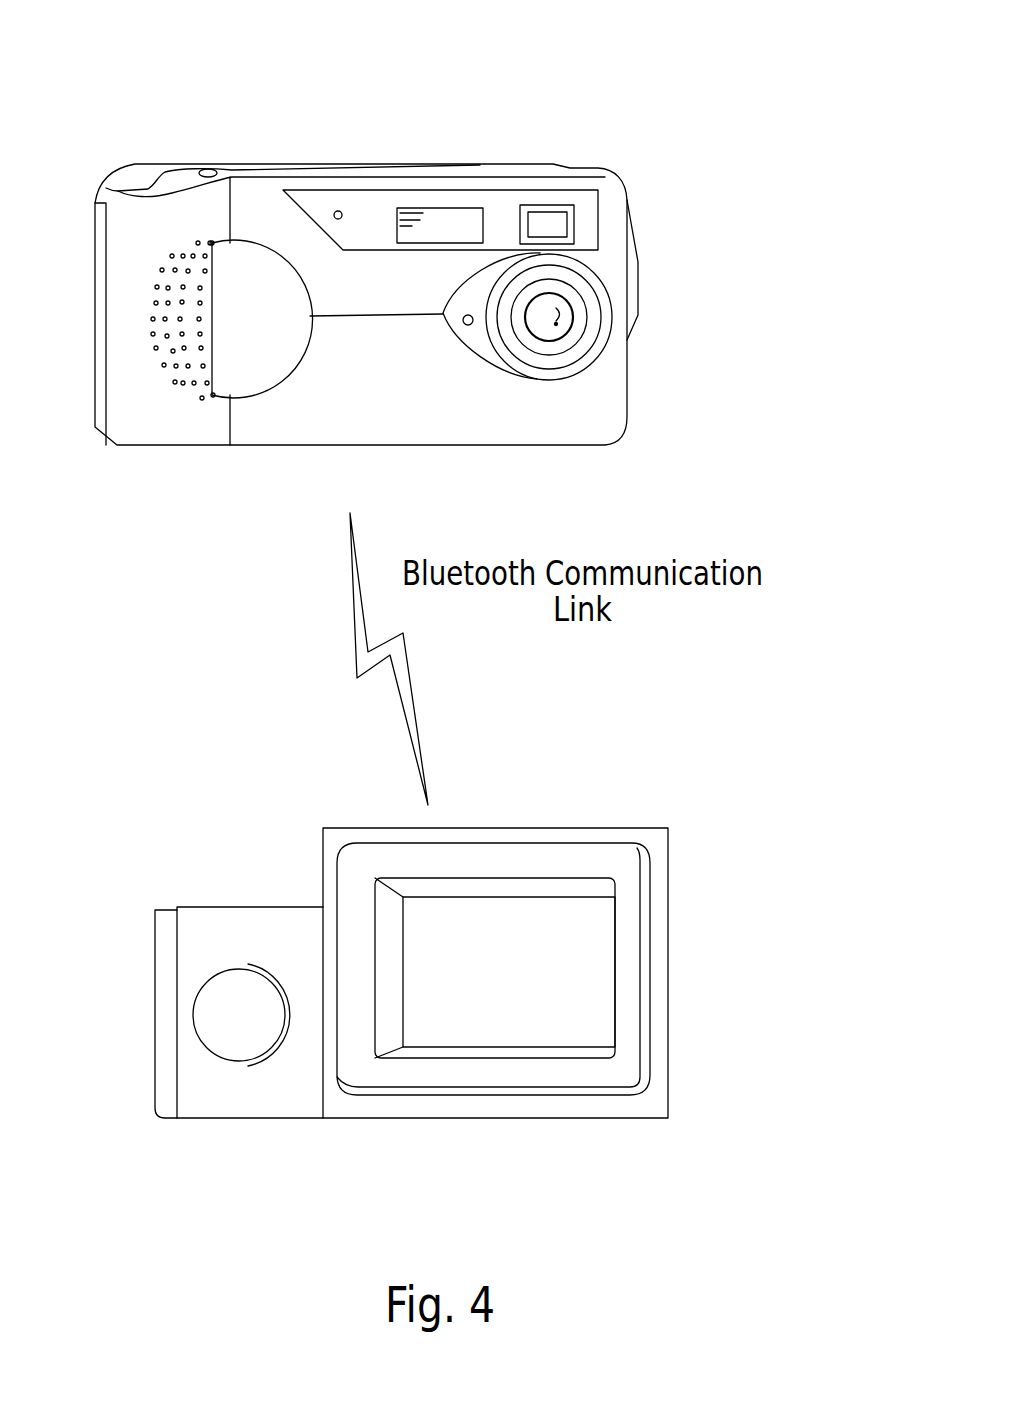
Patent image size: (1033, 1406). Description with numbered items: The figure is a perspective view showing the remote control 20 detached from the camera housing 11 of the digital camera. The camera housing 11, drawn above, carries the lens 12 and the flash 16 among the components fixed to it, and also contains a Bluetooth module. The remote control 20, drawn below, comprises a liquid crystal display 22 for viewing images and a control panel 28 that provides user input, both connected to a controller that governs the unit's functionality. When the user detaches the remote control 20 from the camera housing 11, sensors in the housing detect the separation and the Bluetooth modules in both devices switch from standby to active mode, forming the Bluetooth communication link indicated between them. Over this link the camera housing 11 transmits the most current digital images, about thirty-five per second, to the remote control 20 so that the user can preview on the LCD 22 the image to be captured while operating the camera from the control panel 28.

The camera housing 11 is at (332, 423).
The lens 12 is at (565, 317).
The flash 16 is at (435, 230).
The remote control 20 is at (557, 778).
The liquid crystal display (LCD) 22 is at (482, 1028).
The control panel 28 is at (220, 1005).